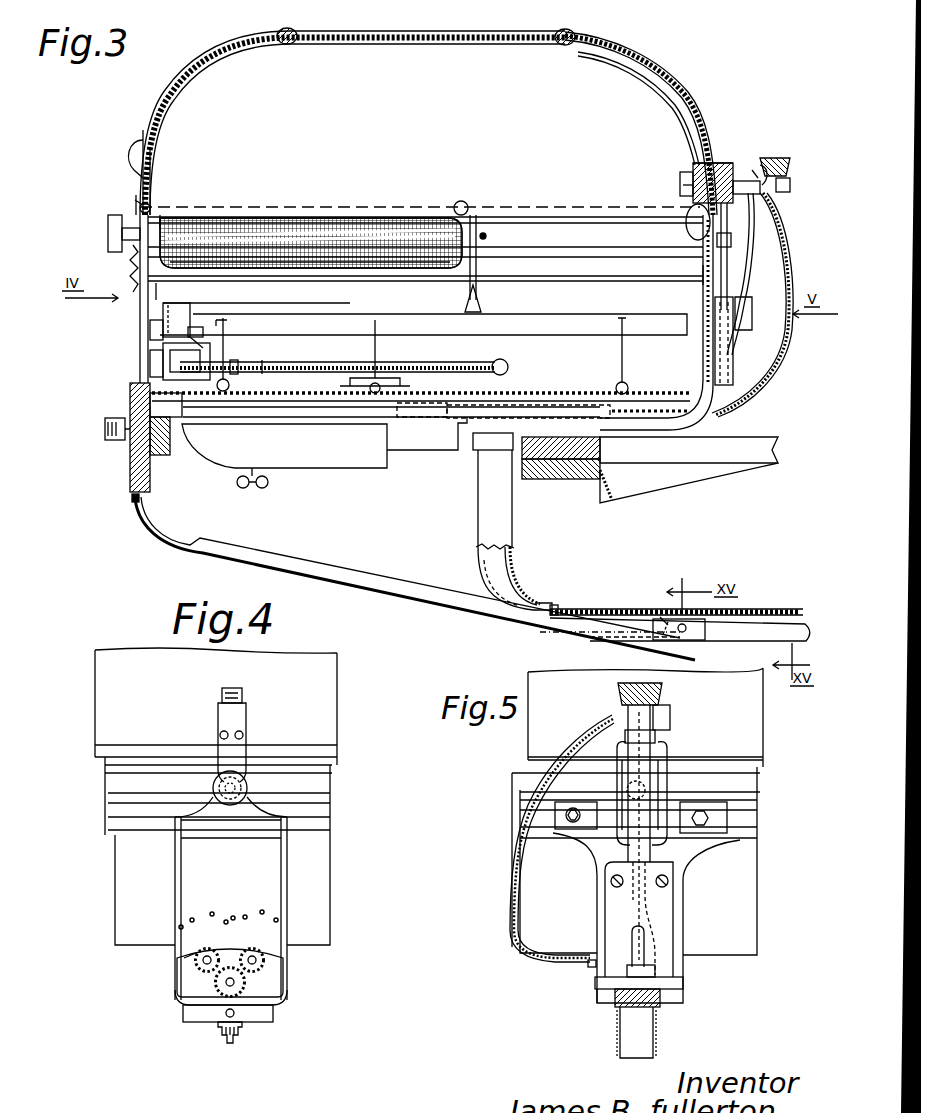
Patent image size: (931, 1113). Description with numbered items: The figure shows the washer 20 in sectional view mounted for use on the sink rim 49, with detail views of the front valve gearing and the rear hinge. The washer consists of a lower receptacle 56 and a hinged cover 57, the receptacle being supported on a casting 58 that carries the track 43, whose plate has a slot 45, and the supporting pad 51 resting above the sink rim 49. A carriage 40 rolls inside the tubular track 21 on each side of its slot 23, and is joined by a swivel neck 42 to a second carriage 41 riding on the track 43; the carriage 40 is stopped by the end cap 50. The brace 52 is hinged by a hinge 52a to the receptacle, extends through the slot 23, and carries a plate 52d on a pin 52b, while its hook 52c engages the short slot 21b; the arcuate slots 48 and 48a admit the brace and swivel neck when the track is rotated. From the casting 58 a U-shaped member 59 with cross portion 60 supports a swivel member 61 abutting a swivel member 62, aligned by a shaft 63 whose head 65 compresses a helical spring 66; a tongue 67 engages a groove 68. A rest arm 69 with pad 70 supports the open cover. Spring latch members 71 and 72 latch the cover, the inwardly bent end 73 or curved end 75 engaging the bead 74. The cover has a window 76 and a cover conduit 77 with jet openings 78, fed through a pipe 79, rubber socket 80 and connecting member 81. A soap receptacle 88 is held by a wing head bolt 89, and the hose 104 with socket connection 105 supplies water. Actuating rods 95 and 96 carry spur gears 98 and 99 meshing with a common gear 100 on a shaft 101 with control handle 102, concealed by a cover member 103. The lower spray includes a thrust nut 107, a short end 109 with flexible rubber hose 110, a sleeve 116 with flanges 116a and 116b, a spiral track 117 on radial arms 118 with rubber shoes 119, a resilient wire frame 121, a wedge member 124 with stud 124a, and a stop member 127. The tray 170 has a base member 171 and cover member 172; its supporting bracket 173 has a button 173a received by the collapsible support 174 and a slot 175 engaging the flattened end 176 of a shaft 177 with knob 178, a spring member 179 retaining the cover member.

In FIG. 3, the washer unit 20 is at (714, 136).
In FIG. 3, the track 21 is at (516, 555).
In FIG. 5, the track 21 is at (614, 1038).
In FIG. 3, the short slot 21b is at (536, 605).
In FIG. 3, the slot 23 is at (478, 562).
In FIG. 5, the carriage 40 is at (660, 1013).
In FIG. 5, the carriage 41 is at (660, 972).
In FIG. 5, the swivel neck 42 is at (683, 985).
In FIG. 5, the track 43 is at (589, 923).
In FIG. 5, the slot 45 is at (658, 944).
In FIG. 3, the arcuate slot 48 is at (790, 628).
In FIG. 3, the arcuate slot 48a is at (748, 643).
In FIG. 3, the sink rim 49 is at (552, 480).
In FIG. 3, the end cap 50 is at (482, 450).
In FIG. 5, the end cap 50 is at (603, 996).
In FIG. 3, the supporting pad 51 is at (610, 445).
In FIG. 3, the brace 52 is at (328, 570).
In FIG. 3, the hinge 52a is at (132, 497).
In FIG. 3, the pin 52b is at (690, 620).
In FIG. 3, the hook 52c is at (555, 606).
In FIG. 3, the plate 52d is at (663, 617).
In FIG. 3, the lower receptacle 56 is at (138, 325).
In FIG. 4, the lower receptacle 56 is at (116, 868).
In FIG. 5, the lower receptacle 56 is at (757, 870).
In FIG. 3, the hinged cover 57 is at (170, 92).
In FIG. 4, the hinged cover 57 is at (102, 680).
In FIG. 5, the hinged cover 57 is at (762, 735).
In FIG. 3, the casting 58 is at (735, 396).
In FIG. 5, the casting 58 is at (605, 888).
In FIG. 3, the U-shaped member 59 is at (729, 219).
In FIG. 5, the U-shaped member 59 is at (670, 795).
In FIG. 5, the cross portion 60 is at (658, 741).
In FIG. 3, the swivel member 61 is at (738, 178).
In FIG. 5, the swivel member 61 is at (624, 725).
In FIG. 3, the swivel member 62 is at (690, 178).
In FIG. 3, the shaft 63 is at (690, 188).
In FIG. 3, the head 65 is at (756, 172).
In FIG. 3, the helical spring 66 is at (748, 168).
In FIG. 3, the tongue 67 is at (715, 165).
In FIG. 3, the groove 68 is at (698, 165).
In FIG. 3, the rest arm 69 is at (788, 240).
In FIG. 5, the rest arm 69 is at (610, 778).
In FIG. 3, the pad 70 is at (790, 167).
In FIG. 5, the pad 70 is at (664, 688).
In FIG. 3, the spring latch member 71 is at (146, 160).
In FIG. 4, the spring latch member 71 is at (252, 722).
In FIG. 3, the spring latch member 72 is at (132, 163).
In FIG. 4, the spring latch member 72 is at (242, 698).
In FIG. 3, the inwardly bent end 73 is at (135, 200).
In FIG. 4, the inwardly bent end 73 is at (242, 757).
In FIG. 3, the bead 74 is at (150, 212).
In FIG. 3, the curved end 75 is at (143, 145).
In FIG. 3, the window 76 is at (413, 46).
In FIG. 3, the cover conduit 77 is at (655, 85).
In FIG. 3, the jet openings 78 is at (602, 54).
In FIG. 3, the pipe 79 is at (704, 272).
In FIG. 3, the rubber socket 80 is at (732, 240).
In FIG. 3, the connecting member 81 is at (688, 216).
In FIG. 3, the soap receptacle 88 is at (340, 468).
In FIG. 3, the wing head bolt 89 is at (255, 490).
In FIG. 4, the actuating rod 95 is at (253, 951).
In FIG. 4, the actuating rod 96 is at (208, 951).
In FIG. 4, the spur gear 98 is at (266, 963).
In FIG. 3, the spur gear 99 is at (182, 405).
In FIG. 4, the spur gear 99 is at (196, 953).
In FIG. 3, the common gear 100 is at (152, 470).
In FIG. 4, the common gear 100 is at (238, 992).
In FIG. 3, the shaft 101 is at (167, 445).
In FIG. 3, the control handle 102 is at (105, 428).
In FIG. 4, the cover member 103 is at (190, 898).
In FIG. 3, the hose 104 is at (775, 358).
In FIG. 5, the hose 104 is at (578, 740).
In FIG. 3, the socket connection 105 is at (790, 185).
In FIG. 5, the socket connection 105 is at (672, 715).
In FIG. 4, the thrust nut 107 is at (227, 988).
In FIG. 3, the short end 109 is at (508, 366).
In FIG. 3, the flexible rubber hose 110 is at (236, 360).
In FIG. 3, the sleeve 116 is at (321, 358).
In FIG. 3, the flange 116a is at (150, 368).
In FIG. 3, the flange 116b is at (380, 365).
In FIG. 3, the spiral track 117 is at (262, 362).
In FIG. 3, the radial arms 118 is at (625, 365).
In FIG. 3, the rubber shoe 119 is at (223, 392).
In FIG. 3, the resilient wire frame 121 is at (200, 335).
In FIG. 3, the wedge member 124 is at (175, 378).
In FIG. 3, the stud 124a is at (190, 312).
In FIG. 3, the stop member 127 is at (150, 340).
In FIG. 3, the tray 170 is at (310, 215).
In FIG. 3, the base member 171 is at (356, 270).
In FIG. 3, the cover member 172 is at (366, 222).
In FIG. 3, the supporting bracket 173 is at (480, 262).
In FIG. 3, the button 173a is at (487, 236).
In FIG. 3, the collapsible support 174 is at (490, 290).
In FIG. 3, the slot 175 is at (178, 215).
In FIG. 3, the flattened end 176 is at (170, 292).
In FIG. 3, the shaft 177 is at (130, 260).
In FIG. 3, the knob 178 is at (110, 238).
In FIG. 4, the knob 178 is at (231, 806).
In FIG. 3, the spring member 179 is at (461, 201).